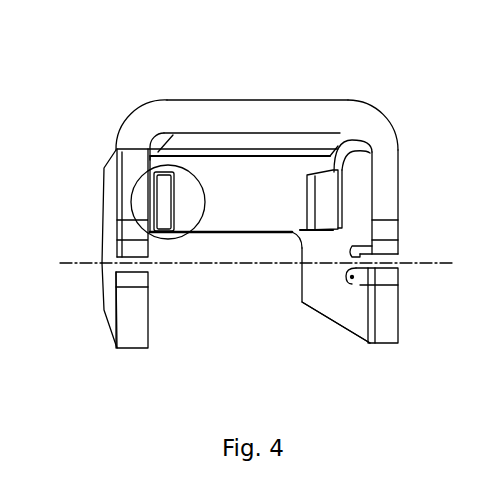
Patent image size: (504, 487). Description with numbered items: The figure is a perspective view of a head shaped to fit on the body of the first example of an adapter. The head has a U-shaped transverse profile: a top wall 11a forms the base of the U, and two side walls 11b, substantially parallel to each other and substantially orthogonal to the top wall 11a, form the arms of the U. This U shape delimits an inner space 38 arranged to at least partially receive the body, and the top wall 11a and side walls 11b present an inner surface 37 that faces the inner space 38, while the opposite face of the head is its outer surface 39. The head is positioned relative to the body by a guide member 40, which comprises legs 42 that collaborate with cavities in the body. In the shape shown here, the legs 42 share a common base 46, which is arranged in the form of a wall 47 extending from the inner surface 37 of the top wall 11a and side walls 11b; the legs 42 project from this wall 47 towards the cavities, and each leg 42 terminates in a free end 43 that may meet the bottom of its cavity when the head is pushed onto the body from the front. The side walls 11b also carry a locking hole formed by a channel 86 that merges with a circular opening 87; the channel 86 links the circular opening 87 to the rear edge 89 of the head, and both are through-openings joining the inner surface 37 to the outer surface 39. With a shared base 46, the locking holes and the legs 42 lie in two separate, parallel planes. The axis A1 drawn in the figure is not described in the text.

The top wall 11a is at (183, 98).
The side walls 11b is at (108, 188).
The inner surface 37 is at (312, 276).
The inner space 38 is at (233, 282).
The outer surface 39 is at (104, 242).
The guide member 40 is at (157, 157).
The leg 42 is at (322, 189).
The free end 43 is at (327, 213).
The base 46 is at (299, 195).
The wall 47 is at (250, 190).
The channel 86 is at (129, 272).
The circular opening 87 is at (115, 275).
The rear edge 89 is at (385, 216).
The axis A1 is at (73, 263).